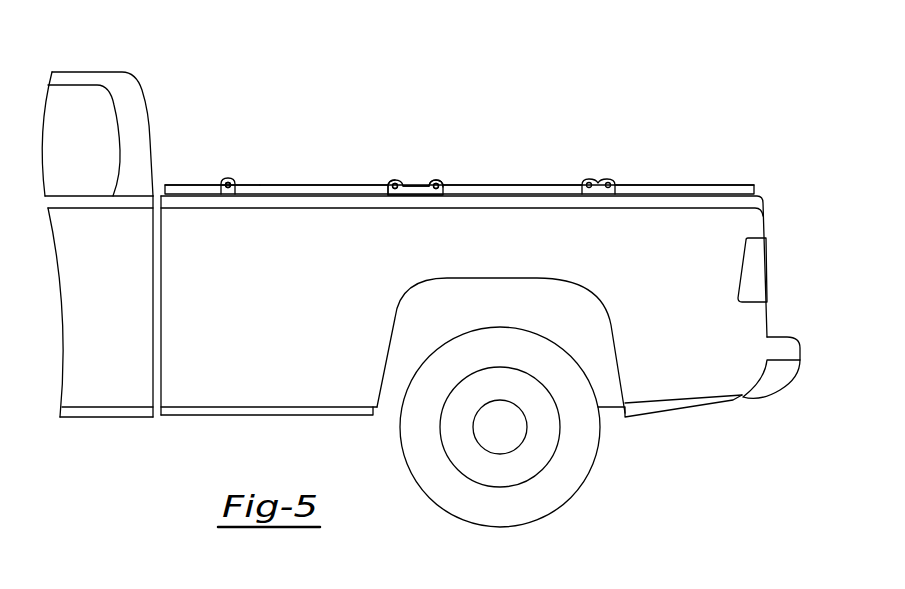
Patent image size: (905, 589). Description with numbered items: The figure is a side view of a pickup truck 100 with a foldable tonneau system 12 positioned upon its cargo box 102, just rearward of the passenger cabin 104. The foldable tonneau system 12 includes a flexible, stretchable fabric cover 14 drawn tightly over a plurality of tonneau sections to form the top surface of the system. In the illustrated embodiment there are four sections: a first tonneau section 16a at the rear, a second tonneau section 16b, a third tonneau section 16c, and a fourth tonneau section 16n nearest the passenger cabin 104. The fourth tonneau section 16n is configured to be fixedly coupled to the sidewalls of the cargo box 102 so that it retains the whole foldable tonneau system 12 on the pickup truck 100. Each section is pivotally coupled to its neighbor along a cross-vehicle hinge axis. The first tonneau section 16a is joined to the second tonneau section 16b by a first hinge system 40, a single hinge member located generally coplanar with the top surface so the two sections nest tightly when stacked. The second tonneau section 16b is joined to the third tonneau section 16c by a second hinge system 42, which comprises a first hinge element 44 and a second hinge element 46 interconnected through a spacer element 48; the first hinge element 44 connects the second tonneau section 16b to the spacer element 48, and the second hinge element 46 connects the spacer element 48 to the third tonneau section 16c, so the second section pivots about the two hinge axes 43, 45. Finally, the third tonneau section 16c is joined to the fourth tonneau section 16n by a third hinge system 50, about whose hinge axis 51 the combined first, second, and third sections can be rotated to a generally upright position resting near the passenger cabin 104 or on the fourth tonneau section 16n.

The passenger cabin 104 is at (88, 72).
The cargo box 102 is at (733, 218).
The pickup truck 100 is at (214, 87).
The foldable tonneau system 12 is at (493, 77).
The flexible, stretchable fabric cover 14 is at (673, 183).
The fourth tonneau section 16n is at (178, 185).
The third tonneau section 16c is at (293, 185).
The second tonneau section 16b is at (547, 185).
The first tonneau section 16a is at (715, 185).
The third hinge system 50 is at (231, 175).
The hinge axis 51 is at (228, 189).
The second hinge system 42 is at (441, 201).
The hinge axis 43 is at (434, 181).
The first hinge element 44 is at (438, 180).
The hinge axis 45 is at (396, 189).
The second hinge element 46 is at (387, 193).
The spacer element 48 is at (412, 183).
The first hinge system 40 is at (607, 201).